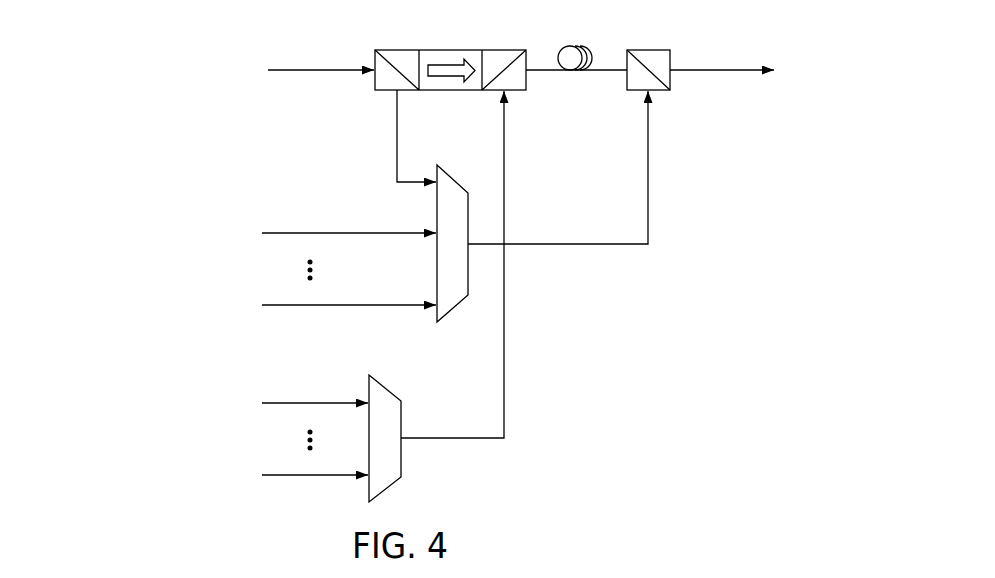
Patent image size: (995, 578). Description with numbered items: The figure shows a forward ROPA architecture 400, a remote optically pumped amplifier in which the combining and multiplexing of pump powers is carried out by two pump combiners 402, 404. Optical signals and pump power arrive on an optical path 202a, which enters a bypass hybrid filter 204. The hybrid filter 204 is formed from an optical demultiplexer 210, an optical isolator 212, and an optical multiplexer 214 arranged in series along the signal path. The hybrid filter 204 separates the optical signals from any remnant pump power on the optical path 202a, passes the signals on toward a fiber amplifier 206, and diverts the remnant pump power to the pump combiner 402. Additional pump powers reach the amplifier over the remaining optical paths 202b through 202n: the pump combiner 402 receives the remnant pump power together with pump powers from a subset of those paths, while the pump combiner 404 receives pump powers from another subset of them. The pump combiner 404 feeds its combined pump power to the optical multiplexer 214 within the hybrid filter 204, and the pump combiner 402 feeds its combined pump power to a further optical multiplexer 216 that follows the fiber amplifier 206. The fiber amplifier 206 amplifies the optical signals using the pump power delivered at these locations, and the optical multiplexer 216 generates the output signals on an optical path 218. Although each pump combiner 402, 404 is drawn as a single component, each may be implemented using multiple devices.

The forward ROPA architecture 400 is at (412, 255).
The optical path 202a is at (312, 67).
The optical path 202b is at (324, 231).
The optical path 202n is at (289, 478).
The bypass hybrid filter 204 is at (462, 219).
The optical demultiplexer 210 is at (394, 48).
The optical isolator 212 is at (443, 92).
The optical multiplexer 214 is at (529, 91).
The fiber amplifier 206 is at (578, 44).
The optical multiplexer 216 is at (655, 47).
The optical path 218 is at (734, 76).
The pump combiner 402 is at (453, 313).
The pump combiner 404 is at (385, 378).